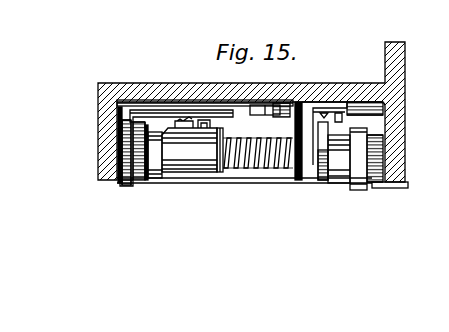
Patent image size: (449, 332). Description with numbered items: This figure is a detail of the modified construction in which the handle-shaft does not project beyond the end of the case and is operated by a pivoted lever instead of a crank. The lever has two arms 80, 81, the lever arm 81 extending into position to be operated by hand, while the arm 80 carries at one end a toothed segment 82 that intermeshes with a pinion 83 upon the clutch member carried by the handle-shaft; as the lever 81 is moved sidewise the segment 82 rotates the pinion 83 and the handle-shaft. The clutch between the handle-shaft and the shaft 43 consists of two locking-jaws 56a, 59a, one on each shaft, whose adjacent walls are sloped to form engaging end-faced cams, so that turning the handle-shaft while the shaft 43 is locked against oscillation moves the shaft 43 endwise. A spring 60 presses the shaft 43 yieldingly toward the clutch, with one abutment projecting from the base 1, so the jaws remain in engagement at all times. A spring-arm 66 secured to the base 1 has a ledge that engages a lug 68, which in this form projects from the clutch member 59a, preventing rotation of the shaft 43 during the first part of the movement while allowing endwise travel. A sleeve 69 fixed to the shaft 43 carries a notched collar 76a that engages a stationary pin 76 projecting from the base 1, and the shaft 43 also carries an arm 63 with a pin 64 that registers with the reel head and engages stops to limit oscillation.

The base 1 is at (119, 85).
The lever arm 81 is at (163, 110).
The toothed segment 82 is at (118, 117).
The pinion 83 is at (118, 152).
The lug 68 is at (230, 117).
The locking-jaw 56a is at (162, 165).
The spring-arm 66 is at (197, 114).
The locking-jaw 59a is at (201, 168).
The spring 60 is at (236, 173).
The shaft 43 is at (273, 168).
The lever arm 80 is at (296, 101).
The stationary pin 76 is at (355, 107).
The collar 76a is at (323, 181).
The sleeve 69 is at (342, 140).
The arm 63 is at (363, 190).
The pin 64 is at (391, 184).